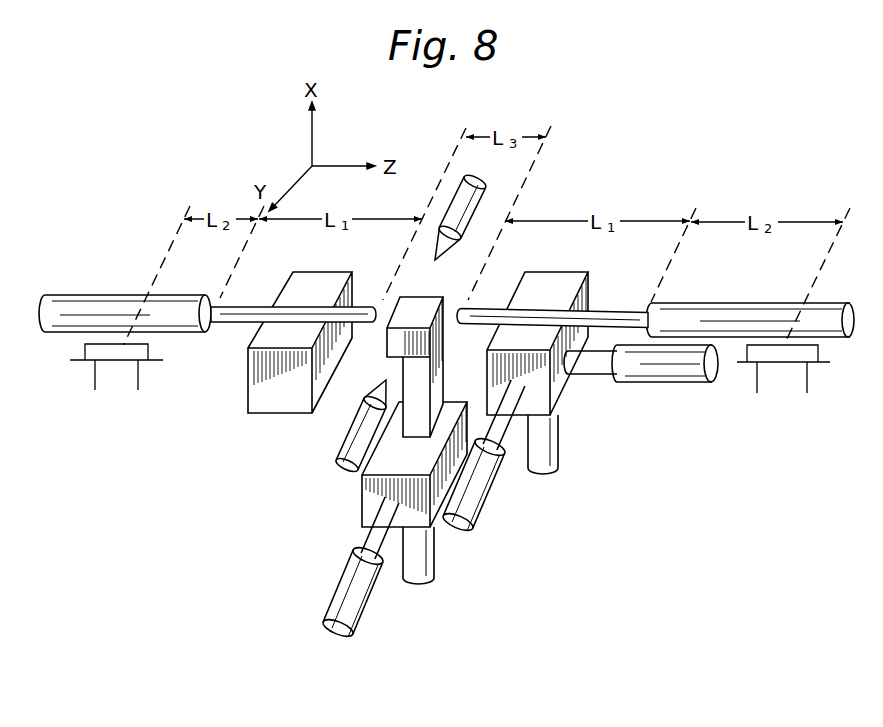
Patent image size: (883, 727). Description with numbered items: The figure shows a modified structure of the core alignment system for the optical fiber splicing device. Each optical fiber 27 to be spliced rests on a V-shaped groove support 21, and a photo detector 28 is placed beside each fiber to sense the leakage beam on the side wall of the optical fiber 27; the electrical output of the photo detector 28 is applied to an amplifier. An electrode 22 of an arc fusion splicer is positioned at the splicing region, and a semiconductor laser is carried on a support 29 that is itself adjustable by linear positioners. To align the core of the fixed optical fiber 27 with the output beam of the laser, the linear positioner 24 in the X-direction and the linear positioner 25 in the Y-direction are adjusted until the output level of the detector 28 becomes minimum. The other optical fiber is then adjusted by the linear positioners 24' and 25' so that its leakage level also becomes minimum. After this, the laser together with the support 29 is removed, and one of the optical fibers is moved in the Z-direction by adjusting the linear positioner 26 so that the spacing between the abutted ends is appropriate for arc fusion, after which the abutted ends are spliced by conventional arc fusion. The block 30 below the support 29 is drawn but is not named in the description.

The V-shaped groove support 21 is at (323, 274).
The electrode 22 is at (478, 178).
The linear positioner (X-direction) 24 is at (437, 573).
The linear positioner 24' is at (563, 465).
The linear positioner (Y-direction) 25 is at (360, 583).
The linear positioner 25' is at (483, 472).
The linear positioner (Z-direction) 26 is at (692, 370).
The optical fiber 27 is at (125, 304).
The photo detector 28 is at (88, 356).
The support 29 is at (403, 372).
The block 30 is at (367, 500).